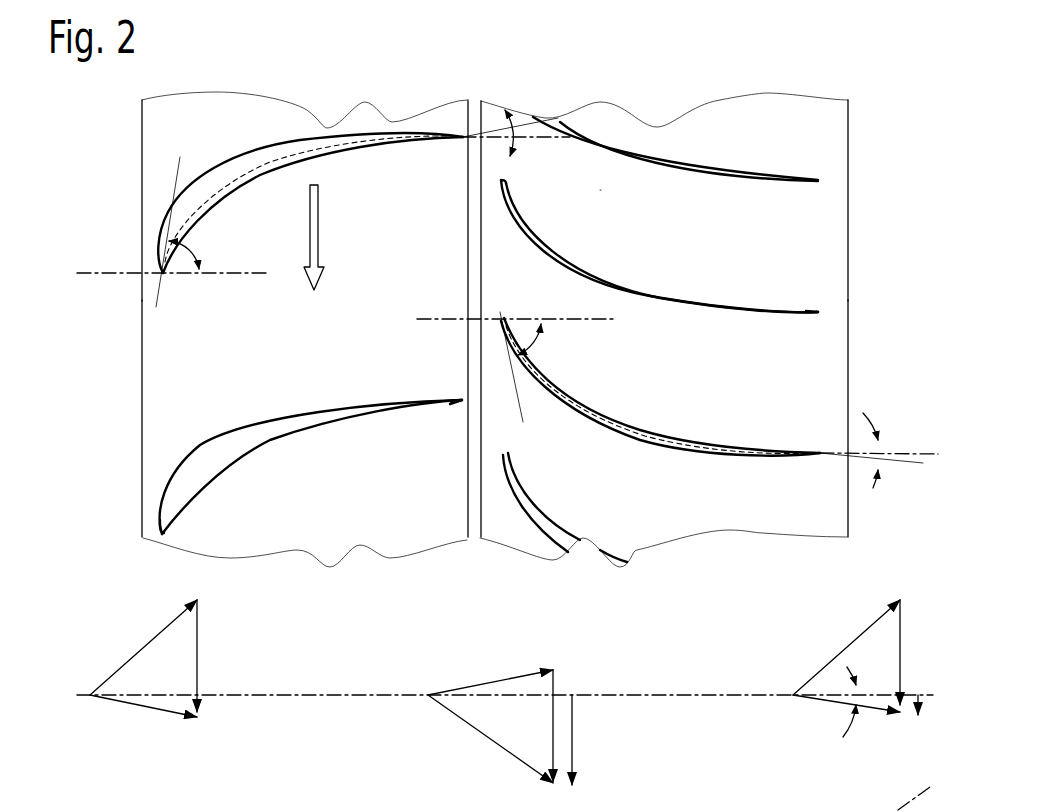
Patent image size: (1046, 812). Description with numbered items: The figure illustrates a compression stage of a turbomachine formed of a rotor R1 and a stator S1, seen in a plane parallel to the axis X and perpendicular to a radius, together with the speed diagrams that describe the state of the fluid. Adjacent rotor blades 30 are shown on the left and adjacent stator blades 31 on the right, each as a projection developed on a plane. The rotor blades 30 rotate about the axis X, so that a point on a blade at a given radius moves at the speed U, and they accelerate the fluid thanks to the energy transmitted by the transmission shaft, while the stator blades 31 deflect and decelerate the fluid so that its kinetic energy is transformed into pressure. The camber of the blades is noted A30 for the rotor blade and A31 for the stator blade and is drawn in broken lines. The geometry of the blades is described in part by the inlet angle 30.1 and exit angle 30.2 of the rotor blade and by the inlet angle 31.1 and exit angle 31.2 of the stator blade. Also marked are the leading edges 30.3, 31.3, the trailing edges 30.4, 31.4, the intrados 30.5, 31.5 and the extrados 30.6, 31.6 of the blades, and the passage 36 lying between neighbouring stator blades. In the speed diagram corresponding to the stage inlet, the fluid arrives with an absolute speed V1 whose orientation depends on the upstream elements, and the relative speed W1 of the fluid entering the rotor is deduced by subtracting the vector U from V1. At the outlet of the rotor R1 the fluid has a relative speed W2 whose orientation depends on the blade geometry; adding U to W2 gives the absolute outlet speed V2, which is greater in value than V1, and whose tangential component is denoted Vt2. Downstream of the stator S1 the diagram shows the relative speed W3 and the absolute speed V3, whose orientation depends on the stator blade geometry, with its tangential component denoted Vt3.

The rotor blade 30 is at (222, 162).
The camber of rotor blade A30 is at (290, 160).
The inlet angle of rotor blade 30.1 is at (173, 232).
The exit angle of rotor blade 30.2 is at (507, 112).
The leading edge of rotor blade 30.3 is at (173, 533).
The trailing edge of rotor blade 30.4 is at (462, 405).
The intrados of rotor blade 30.5 is at (300, 437).
The extrados of rotor blade 30.6 is at (265, 418).
The stator blade 31 is at (702, 168).
The camber of stator blade A31 is at (677, 445).
The inlet angle of stator blade 31.1 is at (515, 367).
The exit angle of stator blade 31.2 is at (879, 571).
The leading edge of stator blade 31.3 is at (503, 173).
The trailing edge of stator blade 31.4 is at (818, 310).
The intrados of stator blade 31.5 is at (683, 297).
The extrados of stator blade 31.6 is at (692, 313).
The flow passage between stator vanes 36 is at (623, 234).
The rotor R1 is at (235, 177).
The stator S1 is at (749, 177).
The speed U is at (318, 218).
The axis X is at (102, 275).
The relative speed vector W1 is at (157, 637).
The absolute speed V1 is at (132, 703).
The relative speed W2 is at (462, 683).
The absolute outlet speed V2 is at (468, 728).
The tangential component of absolute velocity Vt2 is at (591, 740).
The relative speed at stator outlet W3 is at (848, 645).
The speed V3 is at (823, 703).
The tangential component of absolute velocity Vt3 is at (939, 714).